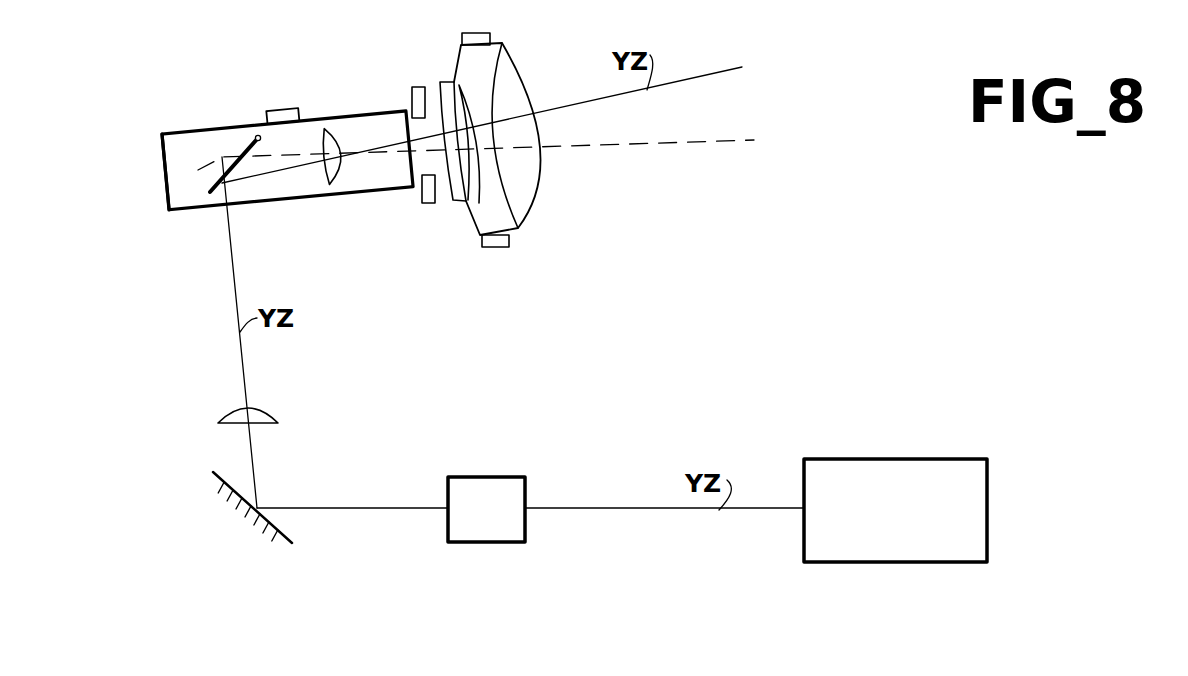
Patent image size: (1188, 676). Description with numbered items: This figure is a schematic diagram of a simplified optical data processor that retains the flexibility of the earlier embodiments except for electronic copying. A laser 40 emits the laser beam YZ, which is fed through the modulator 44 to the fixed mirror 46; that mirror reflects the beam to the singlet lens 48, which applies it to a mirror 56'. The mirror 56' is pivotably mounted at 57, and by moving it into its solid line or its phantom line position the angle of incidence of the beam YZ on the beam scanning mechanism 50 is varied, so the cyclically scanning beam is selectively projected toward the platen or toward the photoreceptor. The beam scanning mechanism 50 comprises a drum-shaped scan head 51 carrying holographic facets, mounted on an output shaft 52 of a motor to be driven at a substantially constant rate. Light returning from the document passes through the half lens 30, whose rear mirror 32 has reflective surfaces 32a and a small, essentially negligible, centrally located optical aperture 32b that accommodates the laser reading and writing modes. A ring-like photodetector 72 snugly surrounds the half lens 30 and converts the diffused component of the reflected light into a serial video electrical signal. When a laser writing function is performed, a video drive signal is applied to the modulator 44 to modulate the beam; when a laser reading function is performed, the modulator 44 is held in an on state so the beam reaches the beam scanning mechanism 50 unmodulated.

The half lens 30 is at (540, 212).
The rear mirror 32 is at (420, 193).
The reflective surfaces 32a is at (443, 183).
The optical aperture 32b is at (424, 120).
The laser 40 is at (973, 432).
The modulator 44 is at (525, 477).
The fixed mirror 46 is at (222, 476).
The singlet lens 48 is at (276, 418).
The beam scanning mechanism 50 is at (196, 126).
The scan head 51 is at (165, 156).
The output shaft 52 is at (298, 118).
The mirror 56' is at (185, 171).
The pivot 57 is at (258, 135).
The photodetector 72 is at (500, 247).